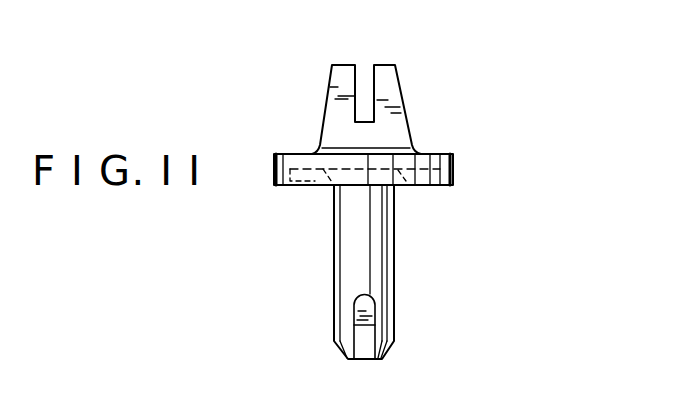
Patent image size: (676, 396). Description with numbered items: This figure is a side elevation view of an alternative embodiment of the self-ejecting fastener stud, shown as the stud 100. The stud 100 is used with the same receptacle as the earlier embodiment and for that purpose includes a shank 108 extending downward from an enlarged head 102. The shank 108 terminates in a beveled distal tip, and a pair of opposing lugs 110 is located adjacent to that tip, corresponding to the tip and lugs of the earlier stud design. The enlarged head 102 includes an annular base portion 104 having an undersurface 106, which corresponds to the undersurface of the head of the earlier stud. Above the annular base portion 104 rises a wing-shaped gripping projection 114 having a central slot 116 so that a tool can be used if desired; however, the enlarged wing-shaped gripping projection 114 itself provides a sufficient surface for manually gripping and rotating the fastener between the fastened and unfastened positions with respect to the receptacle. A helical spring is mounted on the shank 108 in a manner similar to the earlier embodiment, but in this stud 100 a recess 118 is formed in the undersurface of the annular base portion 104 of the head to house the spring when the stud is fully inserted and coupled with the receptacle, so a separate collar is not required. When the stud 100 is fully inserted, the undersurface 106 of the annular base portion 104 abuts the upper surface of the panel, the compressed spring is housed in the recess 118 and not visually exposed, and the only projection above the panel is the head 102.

The stud 100 is at (405, 186).
The enlarged head 102 is at (399, 139).
The annular base portion 104 is at (385, 210).
The undersurface 106 is at (443, 186).
The shank 108 is at (394, 280).
The opposing lugs 110 is at (356, 317).
The wing-shaped gripping projection 114 is at (385, 80).
The central slot 116 is at (363, 80).
The recess 118 is at (317, 187).